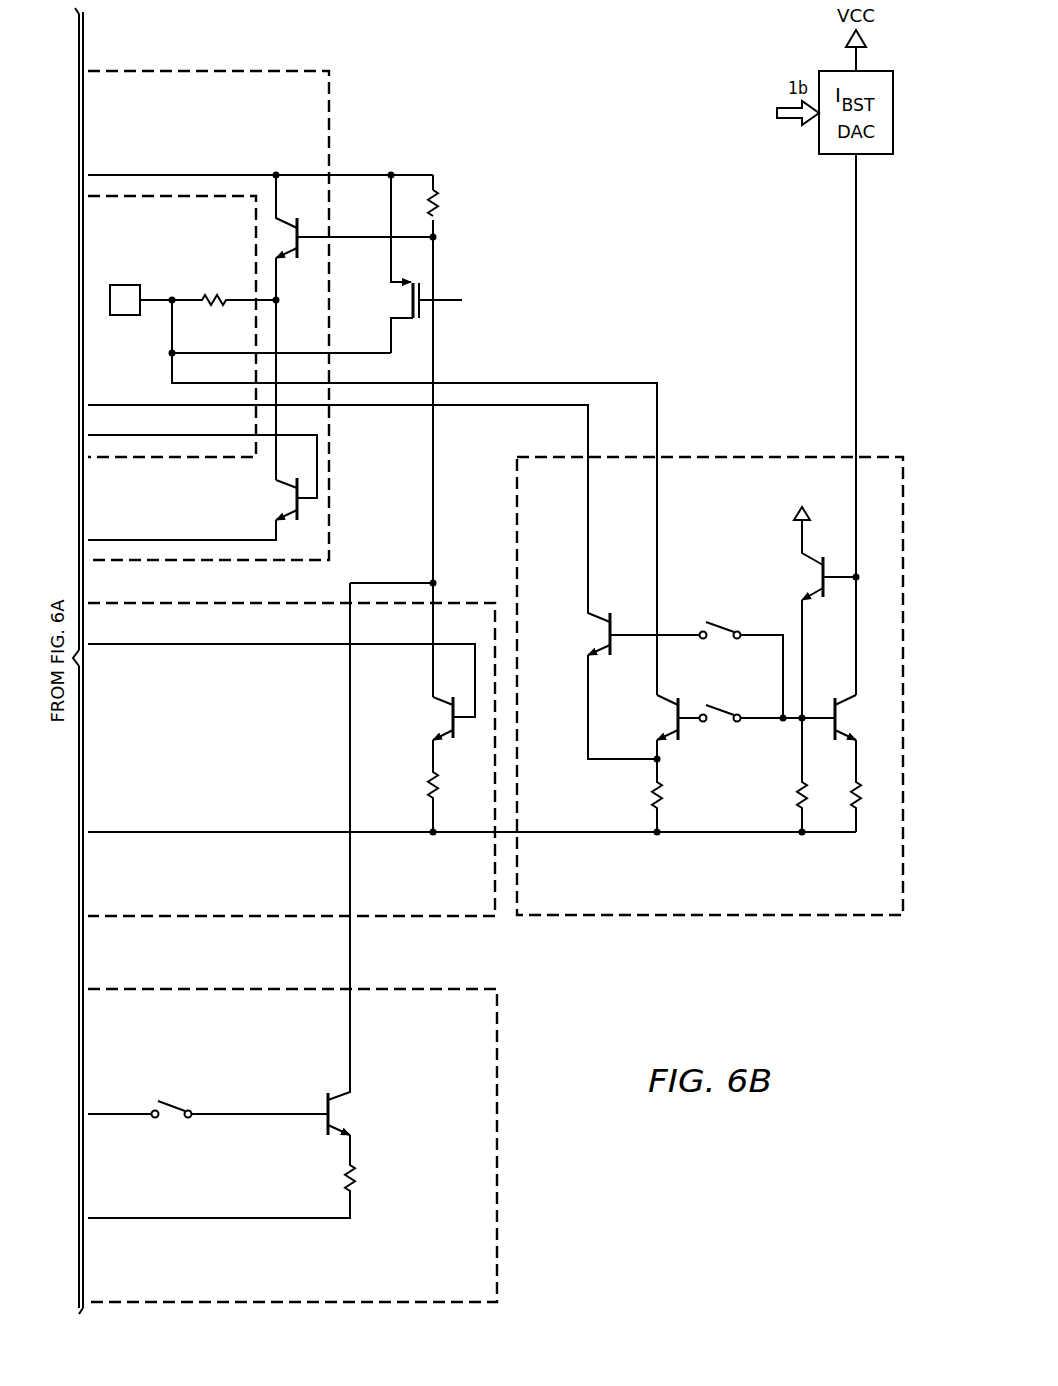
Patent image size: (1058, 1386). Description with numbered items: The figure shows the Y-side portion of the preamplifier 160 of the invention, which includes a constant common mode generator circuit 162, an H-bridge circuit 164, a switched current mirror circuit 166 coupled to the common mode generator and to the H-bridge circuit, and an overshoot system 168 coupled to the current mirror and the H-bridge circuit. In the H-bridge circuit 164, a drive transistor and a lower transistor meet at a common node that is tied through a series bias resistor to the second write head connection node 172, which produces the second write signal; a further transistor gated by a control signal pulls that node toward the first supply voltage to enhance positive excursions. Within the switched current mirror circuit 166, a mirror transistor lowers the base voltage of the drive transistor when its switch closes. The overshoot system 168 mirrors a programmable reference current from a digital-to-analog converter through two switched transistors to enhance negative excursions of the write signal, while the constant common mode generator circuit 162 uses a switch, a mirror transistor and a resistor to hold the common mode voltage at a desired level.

The preamplifier 160 is at (673, 1004).
The constant common mode generator circuit 162 is at (497, 1243).
The H-bridge circuit 164 is at (330, 112).
The switched current mirror circuit 166 is at (430, 917).
The overshoot system 168 is at (718, 456).
The second write head connection node 172 is at (150, 296).